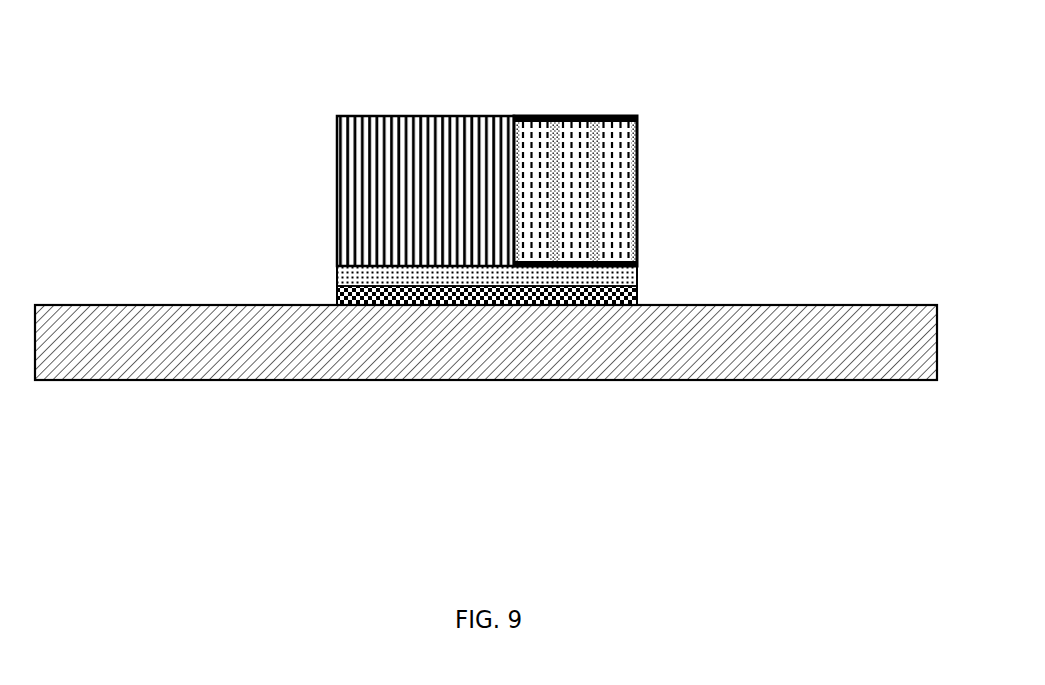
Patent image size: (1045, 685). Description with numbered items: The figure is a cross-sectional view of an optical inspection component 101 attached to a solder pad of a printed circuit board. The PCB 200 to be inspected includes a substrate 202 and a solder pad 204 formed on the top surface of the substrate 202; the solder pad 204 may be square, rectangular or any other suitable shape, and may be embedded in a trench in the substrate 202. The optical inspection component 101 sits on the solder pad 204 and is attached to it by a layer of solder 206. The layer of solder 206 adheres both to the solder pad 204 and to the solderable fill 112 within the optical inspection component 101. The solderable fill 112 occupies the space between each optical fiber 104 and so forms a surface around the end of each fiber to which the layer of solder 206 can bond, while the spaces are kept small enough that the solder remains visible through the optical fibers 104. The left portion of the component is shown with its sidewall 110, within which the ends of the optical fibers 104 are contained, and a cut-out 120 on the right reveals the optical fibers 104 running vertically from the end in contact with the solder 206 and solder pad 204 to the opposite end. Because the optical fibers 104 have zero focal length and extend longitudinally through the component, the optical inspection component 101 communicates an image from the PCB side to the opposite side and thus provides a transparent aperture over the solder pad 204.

The optical inspection component 101 is at (327, 167).
The optical fibers 104 is at (614, 150).
The sidewall 110 is at (360, 148).
The solderable fill 112 is at (555, 125).
The cut-out 120 is at (639, 139).
The PCB 200 is at (495, 403).
The substrate 202 is at (682, 342).
The solder pad 204 is at (637, 294).
The layer of solder 206 is at (637, 274).